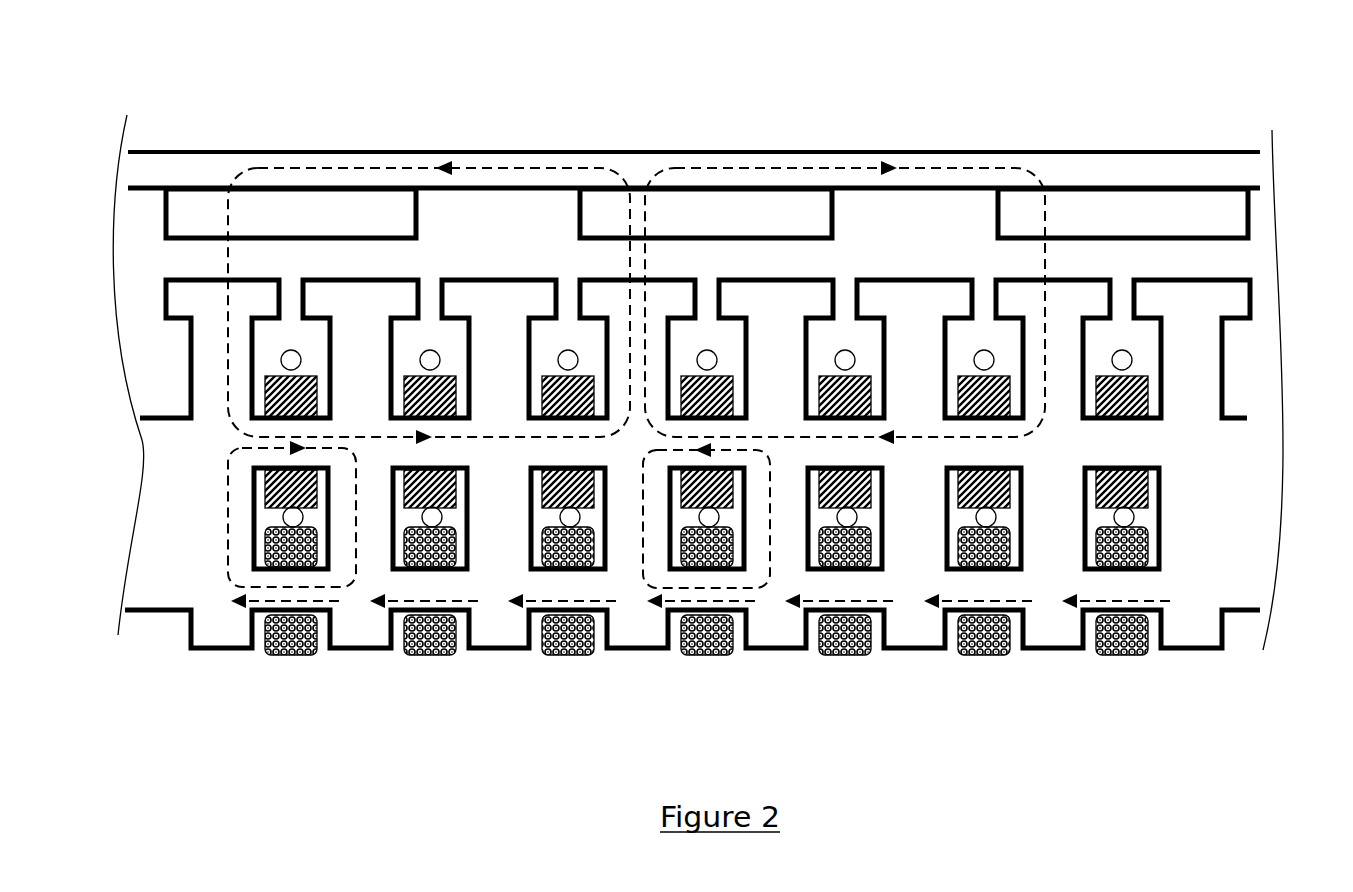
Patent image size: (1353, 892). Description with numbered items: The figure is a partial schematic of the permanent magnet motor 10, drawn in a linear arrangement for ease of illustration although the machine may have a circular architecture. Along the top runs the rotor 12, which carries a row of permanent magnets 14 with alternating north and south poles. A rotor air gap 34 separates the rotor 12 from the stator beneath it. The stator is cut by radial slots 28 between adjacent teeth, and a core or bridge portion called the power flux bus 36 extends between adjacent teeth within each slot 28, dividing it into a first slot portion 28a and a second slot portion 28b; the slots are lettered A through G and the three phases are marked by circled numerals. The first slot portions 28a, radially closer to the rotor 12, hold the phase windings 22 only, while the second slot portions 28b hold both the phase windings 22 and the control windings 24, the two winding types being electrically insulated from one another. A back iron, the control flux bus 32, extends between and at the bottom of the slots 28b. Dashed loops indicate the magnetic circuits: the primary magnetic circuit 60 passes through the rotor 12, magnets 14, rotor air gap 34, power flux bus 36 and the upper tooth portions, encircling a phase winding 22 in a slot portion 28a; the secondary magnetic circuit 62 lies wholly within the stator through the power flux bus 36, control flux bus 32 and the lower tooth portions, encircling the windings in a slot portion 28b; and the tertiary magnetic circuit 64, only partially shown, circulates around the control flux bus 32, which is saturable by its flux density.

The motor 10 is at (142, 121).
The rotor 12 is at (1197, 162).
The permanent magnets 14 is at (190, 221).
The rotor air gap 34 is at (1197, 262).
The radial slots 28 is at (268, 334).
The first slot portion 28a is at (252, 349).
The primary magnetic circuit 60 is at (228, 397).
The power flux bus 36 is at (277, 428).
The second slot portion 28b is at (252, 497).
The secondary magnetic circuit 62 is at (228, 523).
The control flux bus 32 is at (267, 579).
The tertiary magnetic circuit 64 is at (290, 598).
The phase windings 22 is at (1148, 502).
The control windings 24 is at (1148, 637).